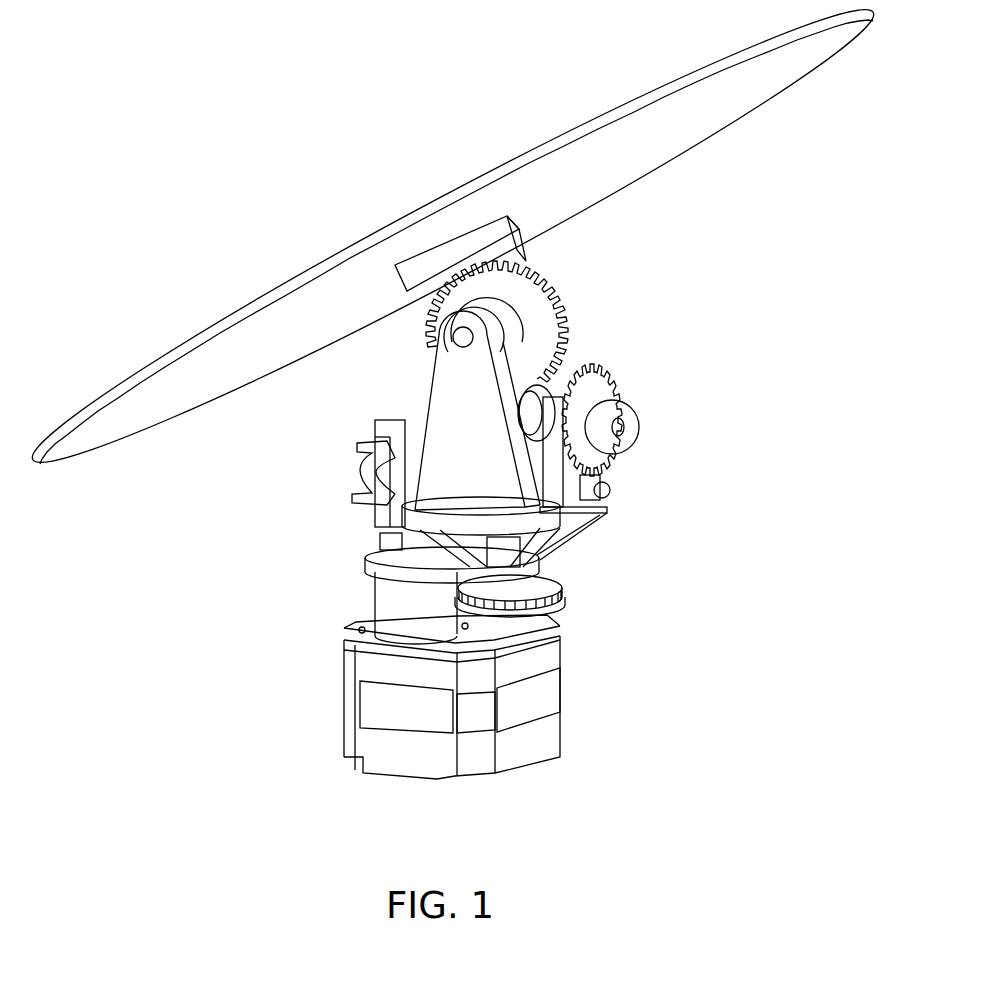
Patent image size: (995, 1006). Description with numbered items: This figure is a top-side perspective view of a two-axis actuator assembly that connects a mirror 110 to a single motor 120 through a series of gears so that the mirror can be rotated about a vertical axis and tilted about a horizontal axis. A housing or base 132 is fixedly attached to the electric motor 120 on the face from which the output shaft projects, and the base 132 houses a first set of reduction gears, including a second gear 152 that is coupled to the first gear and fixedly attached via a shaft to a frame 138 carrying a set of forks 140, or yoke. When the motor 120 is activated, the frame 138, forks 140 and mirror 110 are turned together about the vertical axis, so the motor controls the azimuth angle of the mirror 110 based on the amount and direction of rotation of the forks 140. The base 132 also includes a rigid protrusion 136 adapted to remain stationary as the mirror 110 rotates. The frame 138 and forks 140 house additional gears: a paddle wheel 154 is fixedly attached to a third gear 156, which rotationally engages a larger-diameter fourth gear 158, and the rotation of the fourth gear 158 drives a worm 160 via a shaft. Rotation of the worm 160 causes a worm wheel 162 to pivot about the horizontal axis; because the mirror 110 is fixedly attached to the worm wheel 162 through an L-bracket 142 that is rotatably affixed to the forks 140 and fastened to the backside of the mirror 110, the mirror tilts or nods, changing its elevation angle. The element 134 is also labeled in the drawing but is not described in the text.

The mirror 110 is at (333, 243).
The motor 120 is at (333, 674).
The base 132 is at (397, 593).
The base top plate 134 is at (344, 628).
The rigid protrusion 136 is at (383, 540).
The frame 138 is at (615, 512).
The forks 140 is at (455, 410).
The L-bracket 142 is at (476, 233).
The second gear 152 is at (557, 577).
The paddle wheel 154 is at (357, 488).
The third gear 156 is at (607, 495).
The fourth gear 158 is at (610, 377).
The worm 160 is at (540, 393).
The worm wheel 162 is at (530, 297).